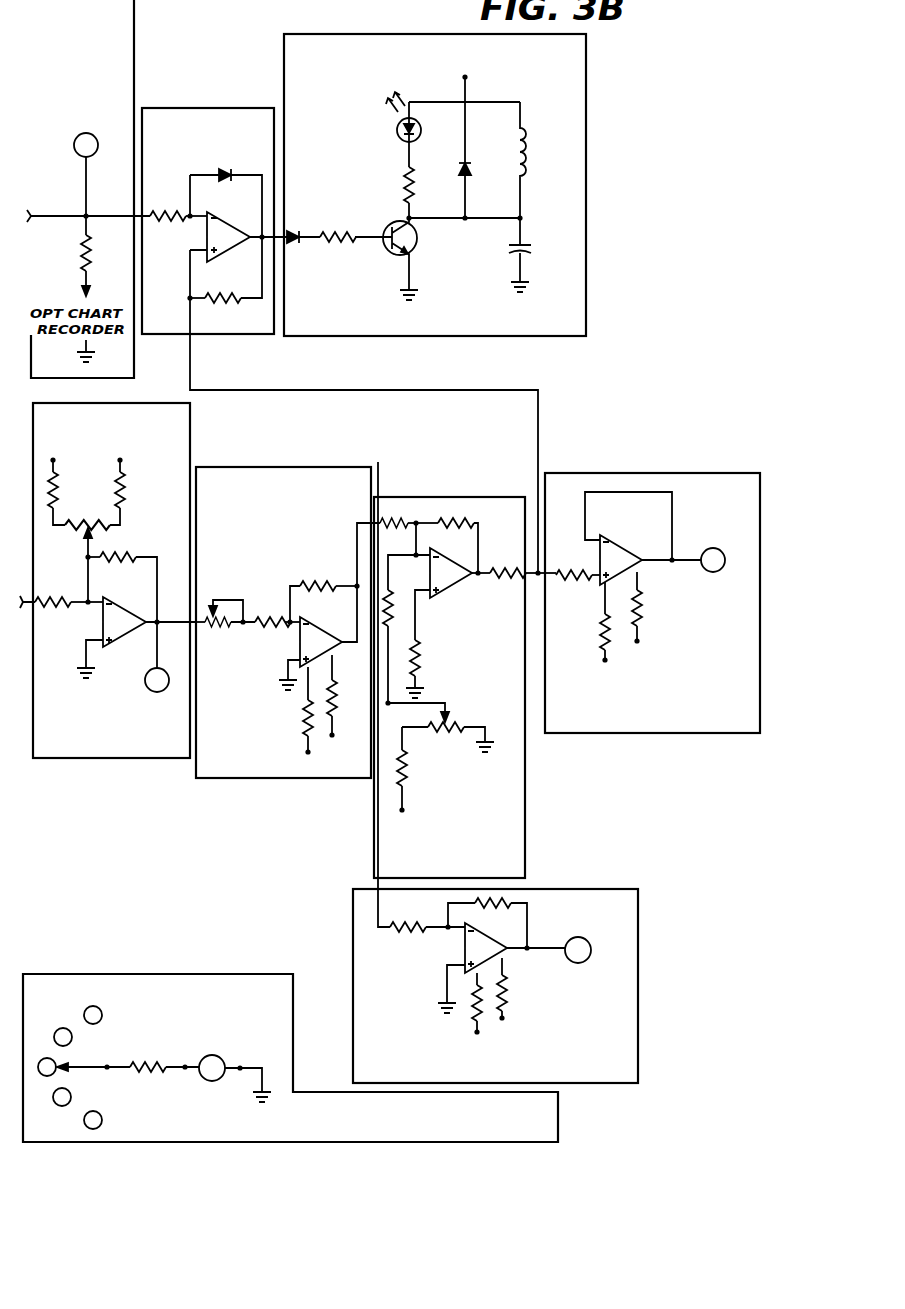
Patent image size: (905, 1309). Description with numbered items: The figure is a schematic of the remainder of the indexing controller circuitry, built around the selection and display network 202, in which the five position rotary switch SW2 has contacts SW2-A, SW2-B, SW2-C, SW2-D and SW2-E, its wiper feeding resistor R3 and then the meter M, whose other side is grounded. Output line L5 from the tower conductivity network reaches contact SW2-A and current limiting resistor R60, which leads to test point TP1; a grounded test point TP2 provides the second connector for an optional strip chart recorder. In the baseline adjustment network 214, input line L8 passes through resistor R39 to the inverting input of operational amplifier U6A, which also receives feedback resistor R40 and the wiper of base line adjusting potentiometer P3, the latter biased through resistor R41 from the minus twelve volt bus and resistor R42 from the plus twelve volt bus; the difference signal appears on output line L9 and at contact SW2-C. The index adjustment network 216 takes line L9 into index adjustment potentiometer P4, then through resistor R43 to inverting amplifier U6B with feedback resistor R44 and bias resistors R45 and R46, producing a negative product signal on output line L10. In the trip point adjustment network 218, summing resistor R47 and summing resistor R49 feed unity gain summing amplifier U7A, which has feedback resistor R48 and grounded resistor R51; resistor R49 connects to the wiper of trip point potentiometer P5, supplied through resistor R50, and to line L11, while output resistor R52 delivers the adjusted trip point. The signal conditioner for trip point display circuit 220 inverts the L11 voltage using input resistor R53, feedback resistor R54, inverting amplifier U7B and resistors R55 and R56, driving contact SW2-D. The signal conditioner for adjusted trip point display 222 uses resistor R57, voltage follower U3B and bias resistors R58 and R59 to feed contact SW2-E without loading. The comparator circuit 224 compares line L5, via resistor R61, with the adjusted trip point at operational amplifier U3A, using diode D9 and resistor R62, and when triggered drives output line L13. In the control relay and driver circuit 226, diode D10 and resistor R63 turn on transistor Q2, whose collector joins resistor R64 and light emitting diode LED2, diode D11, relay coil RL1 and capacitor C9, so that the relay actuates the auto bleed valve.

The switch contact SW2-A is at (86, 134).
The output line L5 is at (58, 212).
The current limiting resistor R60 is at (78, 262).
The test point TP1 is at (88, 293).
The test point TP2 is at (78, 348).
The comparator circuit 224 is at (190, 161).
The resistor R61 is at (164, 224).
The operational amplifier U3A is at (228, 237).
The diode D9 is at (227, 172).
The resistor R62 is at (218, 304).
The control relay and driver circuit 226 is at (350, 89).
The light emitting diode LED2 is at (396, 130).
The resistor R64 is at (393, 185).
The transistor Q2 is at (392, 221).
The diode D10 is at (291, 230).
The output line L13 is at (282, 242).
The resistor R63 is at (336, 248).
The diode D11 is at (470, 172).
The relay coil RL1 is at (523, 165).
The capacitor C9 is at (528, 251).
The baseline adjustment network 214 is at (132, 435).
The resistor R41 is at (60, 487).
The resistor R42 is at (128, 489).
The base line adjusting potentiometer P3 is at (93, 522).
The feedback resistor R40 is at (124, 553).
The input line L8 is at (24, 607).
The resistor R39 is at (60, 596).
The operational amplifier U6A is at (124, 619).
The output line L9 is at (168, 620).
The switch contact SW2-C is at (146, 678).
The index adjustment network 216 is at (250, 539).
The index adjustment potentiometer P4 is at (221, 634).
The resistor R43 is at (268, 626).
The feedback resistor R44 is at (318, 582).
The inverting operational amplifier U6B is at (319, 641).
The bias resistor R45 is at (303, 721).
The resistor R46 is at (334, 707).
The output line L10 is at (378, 465).
The line L11 is at (376, 805).
The trip point adjustment network 218 is at (498, 806).
The summing resistor R47 is at (396, 510).
The feedback resistor R48 is at (460, 510).
The summing amplifier U7A is at (448, 569).
The output resistor R52 is at (503, 568).
The summing resistor R49 is at (392, 611).
The resistor R51 is at (422, 663).
The trip point potentiometer P5 is at (460, 734).
The resistor R50 is at (408, 763).
The signal conditioner for adjusted trip point display 222 is at (748, 644).
The resistor R57 is at (581, 581).
The voltage follower operational amplifier U3B is at (621, 563).
The switch contact SW2-E is at (722, 548).
The bias resistor R58 is at (597, 631).
The bias resistor R59 is at (648, 613).
The signal conditioner for trip point display circuit 220 is at (616, 1029).
The input resistor R53 is at (410, 923).
The feedback resistor R54 is at (506, 897).
The inverting amplifier U7B is at (484, 948).
The switch contact SW2-D is at (590, 938).
The resistor R55 is at (472, 997).
The resistor R56 is at (508, 993).
The selection and display network 202 is at (265, 1003).
The switch contact SW2-B is at (71, 1029).
The five position rotary switch SW2 is at (92, 1067).
The resistor R3 is at (148, 1064).
The meter M is at (218, 1060).